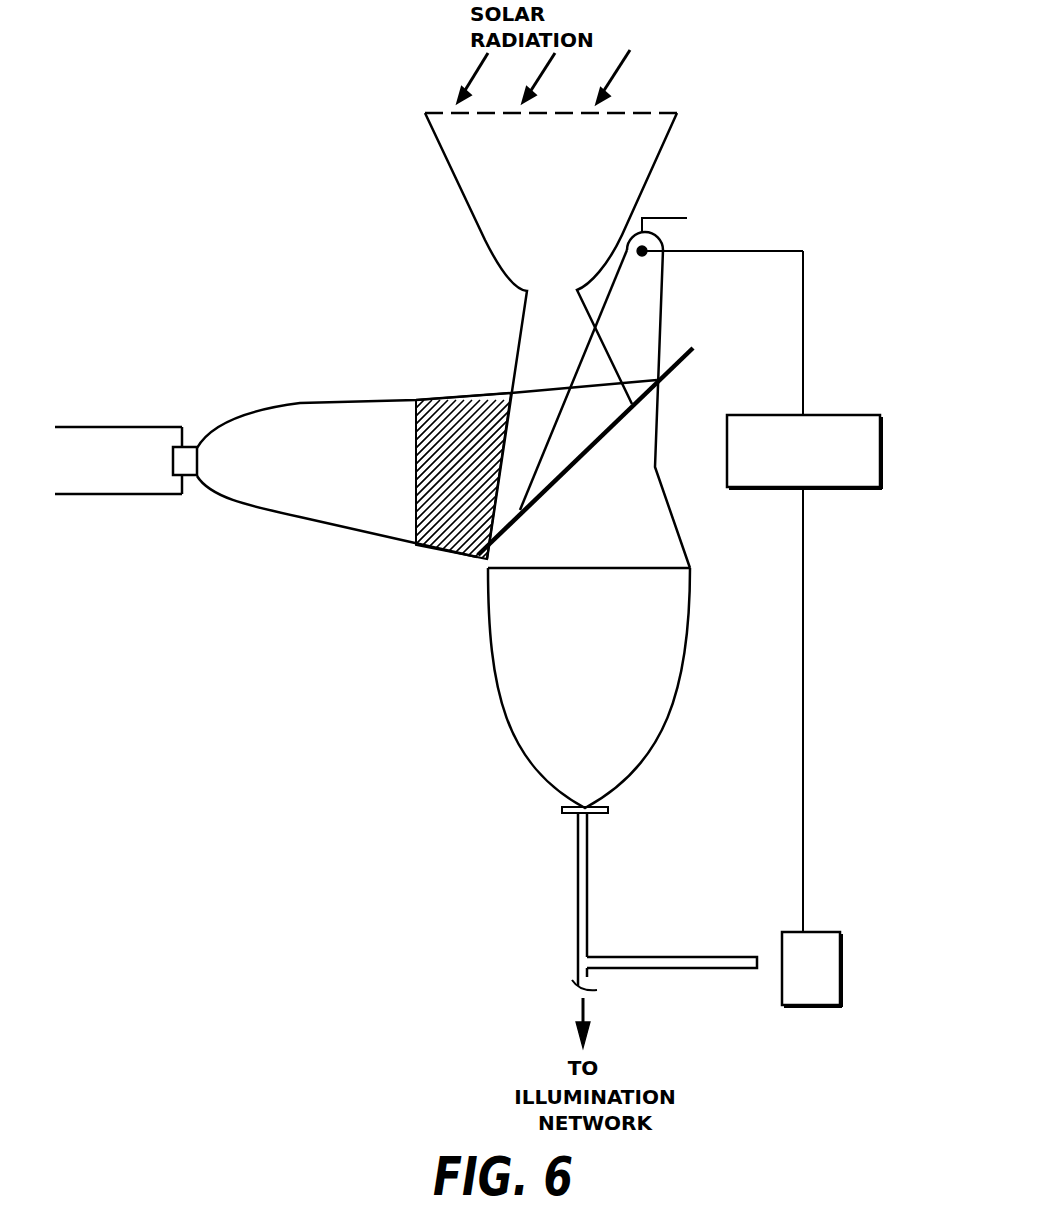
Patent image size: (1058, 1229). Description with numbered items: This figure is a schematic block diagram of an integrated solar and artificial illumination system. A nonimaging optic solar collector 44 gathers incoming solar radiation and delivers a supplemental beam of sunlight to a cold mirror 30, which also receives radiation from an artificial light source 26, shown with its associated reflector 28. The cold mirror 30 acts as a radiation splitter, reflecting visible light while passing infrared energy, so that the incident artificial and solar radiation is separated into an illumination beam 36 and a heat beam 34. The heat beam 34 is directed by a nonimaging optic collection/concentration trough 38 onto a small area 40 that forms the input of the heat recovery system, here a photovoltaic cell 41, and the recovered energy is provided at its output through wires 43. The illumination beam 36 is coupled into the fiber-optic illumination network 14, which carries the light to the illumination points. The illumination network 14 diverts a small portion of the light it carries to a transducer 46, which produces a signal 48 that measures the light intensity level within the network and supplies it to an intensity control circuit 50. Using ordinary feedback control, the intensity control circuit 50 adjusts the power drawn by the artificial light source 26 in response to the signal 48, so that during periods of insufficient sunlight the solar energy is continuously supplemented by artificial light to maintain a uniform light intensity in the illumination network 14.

The optical distribution network 14 is at (578, 903).
The artificial light source 26 is at (644, 253).
The reflector 28 is at (658, 300).
The cold mirror 30 is at (683, 357).
The heat beam 34 is at (462, 403).
The illumination beam 36 is at (660, 537).
The nonimaging optic collection/concentration trough 38 is at (314, 400).
The small area 40 is at (146, 449).
The photovoltaic cell 41 is at (173, 461).
The wires 43 is at (108, 427).
The nonimaging optic solar collector 44 is at (650, 183).
The transducer 46 is at (840, 975).
The signal 48 is at (803, 745).
The intensity control circuit 50 is at (838, 415).